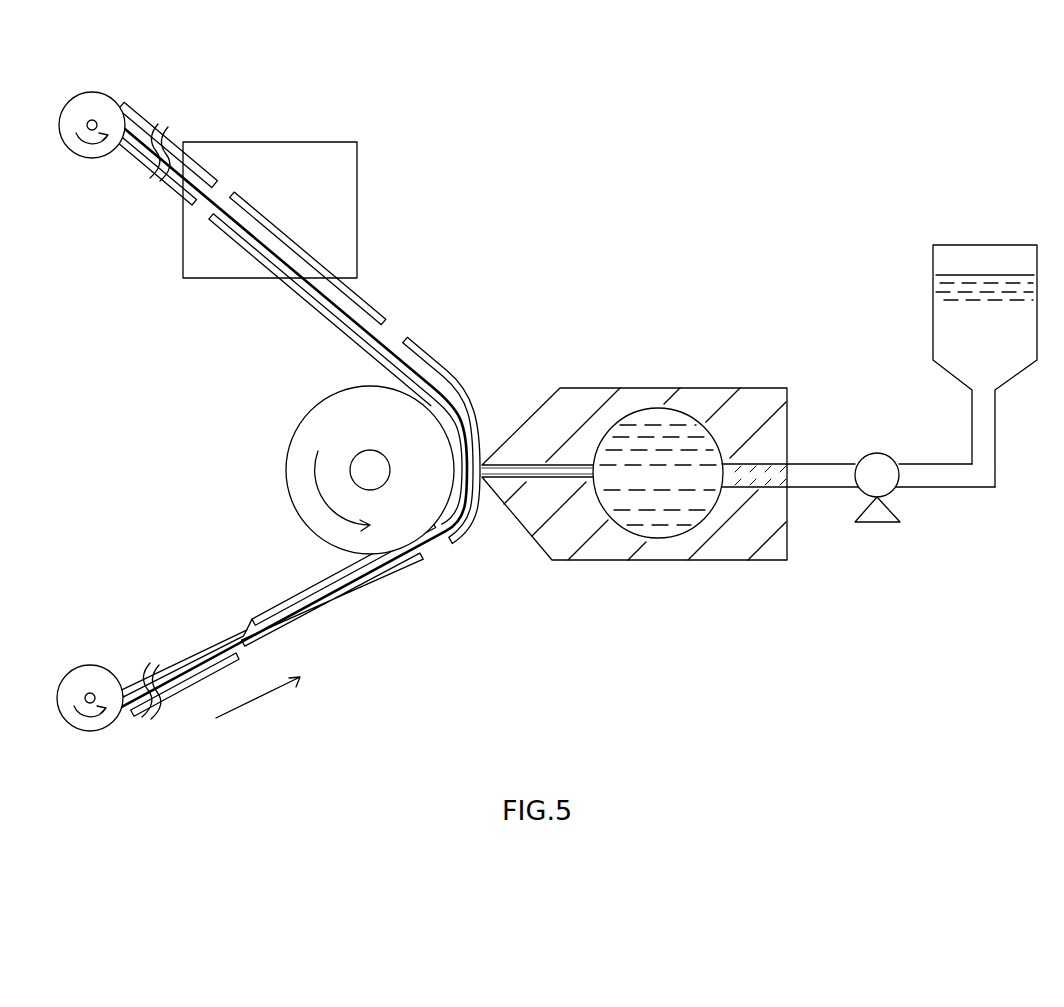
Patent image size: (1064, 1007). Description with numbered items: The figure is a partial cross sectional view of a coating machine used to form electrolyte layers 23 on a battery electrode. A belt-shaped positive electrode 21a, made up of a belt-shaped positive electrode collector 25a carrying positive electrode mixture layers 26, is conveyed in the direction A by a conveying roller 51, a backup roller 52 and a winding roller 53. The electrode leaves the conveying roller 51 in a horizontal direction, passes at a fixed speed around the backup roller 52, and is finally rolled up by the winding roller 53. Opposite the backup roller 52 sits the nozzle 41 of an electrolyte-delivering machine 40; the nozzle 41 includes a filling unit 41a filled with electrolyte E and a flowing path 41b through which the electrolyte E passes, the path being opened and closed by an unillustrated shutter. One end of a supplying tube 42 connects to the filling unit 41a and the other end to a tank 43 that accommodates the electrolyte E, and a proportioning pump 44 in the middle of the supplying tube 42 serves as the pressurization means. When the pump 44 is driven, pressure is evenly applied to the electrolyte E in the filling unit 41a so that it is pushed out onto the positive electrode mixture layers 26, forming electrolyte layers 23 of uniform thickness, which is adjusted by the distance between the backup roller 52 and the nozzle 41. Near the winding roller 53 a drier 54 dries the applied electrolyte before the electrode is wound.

The belt-shaped positive electrode 21a is at (258, 582).
The electrolyte layer 23 is at (410, 347).
The belt-shaped positive electrode collector 25a is at (253, 630).
The positive electrode mixture layer 26 is at (195, 675).
The electrolyte-delivering machine 40 is at (922, 143).
The nozzle 41 is at (634, 448).
The filling unit 41a is at (665, 414).
The flowing path 41b is at (577, 465).
The supplying tube 42 is at (825, 463).
The tank 43 is at (987, 341).
The proportioning pump 44 is at (883, 455).
The conveying roller 51 is at (97, 664).
The backup roller 52 is at (302, 410).
The winding roller 53 is at (98, 90).
The drier 54 is at (324, 142).
The electrolyte E is at (954, 272).
The conveying direction A is at (258, 704).